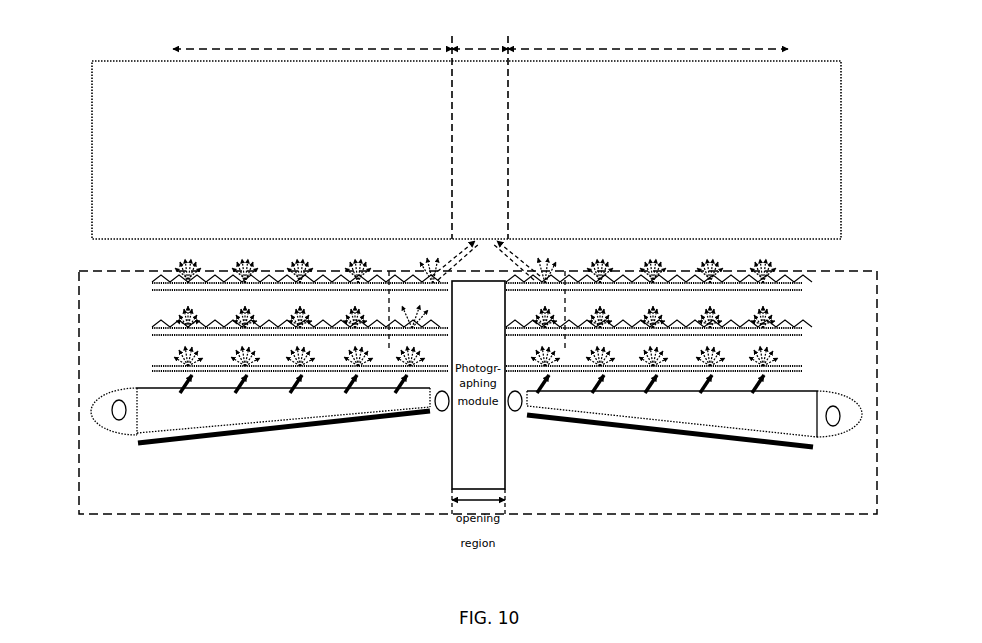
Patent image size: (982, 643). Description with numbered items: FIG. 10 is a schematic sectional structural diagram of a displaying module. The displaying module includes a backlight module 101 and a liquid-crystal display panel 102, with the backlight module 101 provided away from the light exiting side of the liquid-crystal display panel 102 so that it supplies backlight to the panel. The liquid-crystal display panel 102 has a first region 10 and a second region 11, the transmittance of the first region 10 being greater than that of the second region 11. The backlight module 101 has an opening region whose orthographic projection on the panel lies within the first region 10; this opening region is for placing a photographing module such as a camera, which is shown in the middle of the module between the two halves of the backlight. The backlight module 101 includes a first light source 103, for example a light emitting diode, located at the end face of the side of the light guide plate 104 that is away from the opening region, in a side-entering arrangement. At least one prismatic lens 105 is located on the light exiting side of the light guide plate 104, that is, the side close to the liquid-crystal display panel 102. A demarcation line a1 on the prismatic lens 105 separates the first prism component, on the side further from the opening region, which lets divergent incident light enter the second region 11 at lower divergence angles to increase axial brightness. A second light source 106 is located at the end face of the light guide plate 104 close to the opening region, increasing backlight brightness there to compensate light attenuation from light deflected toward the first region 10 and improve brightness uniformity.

The first region 10 is at (480, 128).
The second region 11 is at (480, 38).
The backlight module 101 is at (342, 514).
The liquid-crystal display panel 102 is at (841, 170).
The first light source 103 is at (118, 420).
The light guide plate 104 is at (211, 405).
The prismatic lens 105 is at (152, 325).
The second light source 106 is at (442, 411).
The demarcation line a1 is at (480, 299).